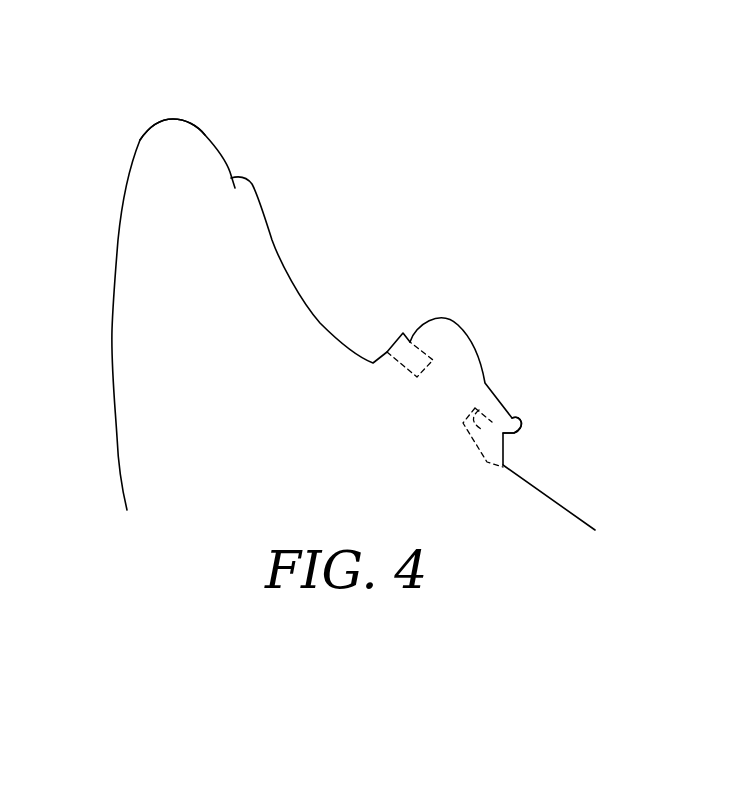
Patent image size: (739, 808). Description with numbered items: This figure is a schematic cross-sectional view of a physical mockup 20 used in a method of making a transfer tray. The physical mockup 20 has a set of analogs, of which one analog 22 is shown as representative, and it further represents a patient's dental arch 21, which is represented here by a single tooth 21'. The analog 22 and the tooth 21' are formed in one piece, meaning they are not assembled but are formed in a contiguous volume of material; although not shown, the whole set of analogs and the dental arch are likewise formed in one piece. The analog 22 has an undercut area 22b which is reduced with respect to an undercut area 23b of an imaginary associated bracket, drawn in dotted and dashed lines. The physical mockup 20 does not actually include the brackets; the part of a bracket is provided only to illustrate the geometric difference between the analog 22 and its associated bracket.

The physical mockup 20 is at (336, 291).
The dental arch 21 is at (137, 314).
The tooth 21' is at (172, 96).
The analog 22 is at (458, 352).
The undercut area 22b is at (505, 453).
The undercut area 23b is at (485, 423).